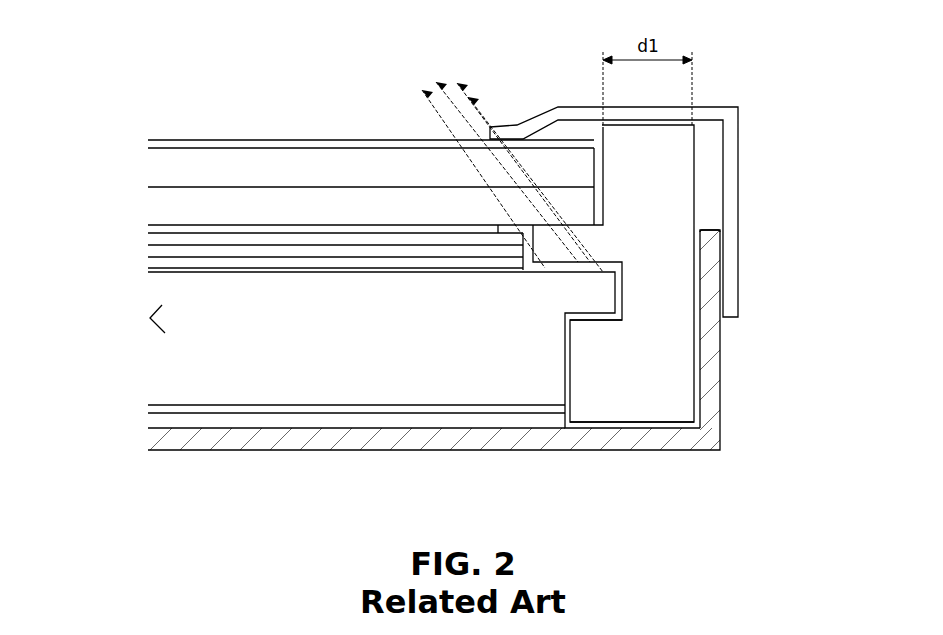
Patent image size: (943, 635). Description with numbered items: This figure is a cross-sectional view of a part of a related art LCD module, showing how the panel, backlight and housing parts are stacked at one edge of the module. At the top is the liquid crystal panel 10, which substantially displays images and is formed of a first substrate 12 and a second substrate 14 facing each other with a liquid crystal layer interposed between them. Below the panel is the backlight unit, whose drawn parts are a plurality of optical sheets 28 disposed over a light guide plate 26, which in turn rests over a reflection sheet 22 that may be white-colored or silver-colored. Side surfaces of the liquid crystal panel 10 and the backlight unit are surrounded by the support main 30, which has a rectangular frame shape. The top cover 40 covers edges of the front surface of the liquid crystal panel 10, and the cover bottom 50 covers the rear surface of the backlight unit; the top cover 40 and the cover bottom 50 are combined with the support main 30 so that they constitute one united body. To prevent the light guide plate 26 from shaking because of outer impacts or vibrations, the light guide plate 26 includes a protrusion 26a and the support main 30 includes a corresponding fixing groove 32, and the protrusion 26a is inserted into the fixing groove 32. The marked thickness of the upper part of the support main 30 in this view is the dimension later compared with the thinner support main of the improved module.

The liquid crystal panel 10 is at (371, 117).
The first substrate 12 is at (313, 202).
The second substrate 14 is at (258, 140).
The reflection sheet 22 is at (148, 430).
The light guide plate 26 is at (148, 406).
The protrusion 26a is at (616, 331).
The optical sheets 28 is at (148, 257).
The support main 30 is at (697, 331).
The fixing groove 32 is at (645, 452).
The top cover 40 is at (700, 106).
The cover bottom 50 is at (721, 377).